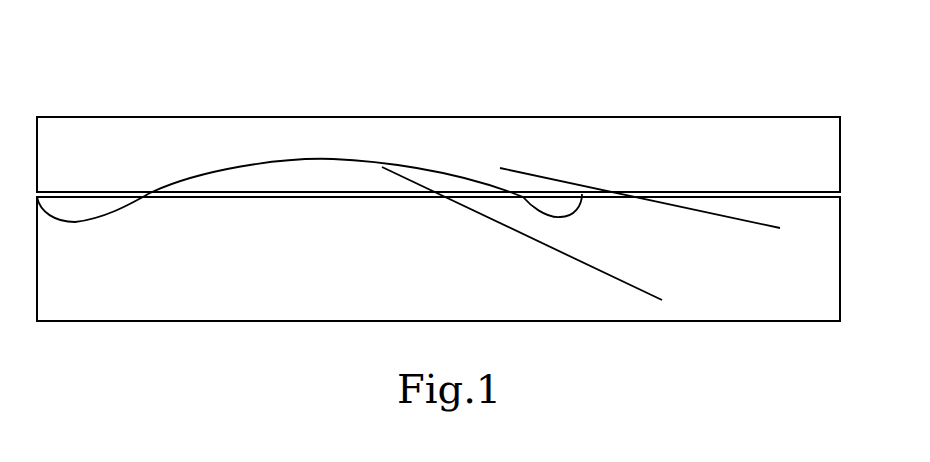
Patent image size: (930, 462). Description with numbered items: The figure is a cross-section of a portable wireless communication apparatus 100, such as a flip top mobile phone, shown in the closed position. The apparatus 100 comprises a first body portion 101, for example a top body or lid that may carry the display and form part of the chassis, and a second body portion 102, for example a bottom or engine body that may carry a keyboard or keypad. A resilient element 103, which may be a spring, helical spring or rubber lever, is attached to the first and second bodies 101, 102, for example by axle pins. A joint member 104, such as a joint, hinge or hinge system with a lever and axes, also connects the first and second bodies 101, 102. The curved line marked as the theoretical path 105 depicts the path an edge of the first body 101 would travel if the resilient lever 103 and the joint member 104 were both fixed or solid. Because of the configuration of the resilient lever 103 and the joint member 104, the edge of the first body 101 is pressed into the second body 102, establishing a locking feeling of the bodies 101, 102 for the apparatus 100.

The portable wireless communication apparatus 100 is at (106, 76).
The first body portion 101 is at (643, 115).
The second body portion 102 is at (273, 323).
The resilient element 103 is at (567, 260).
The joint member 104 is at (742, 220).
The theoretical path 105 is at (83, 222).